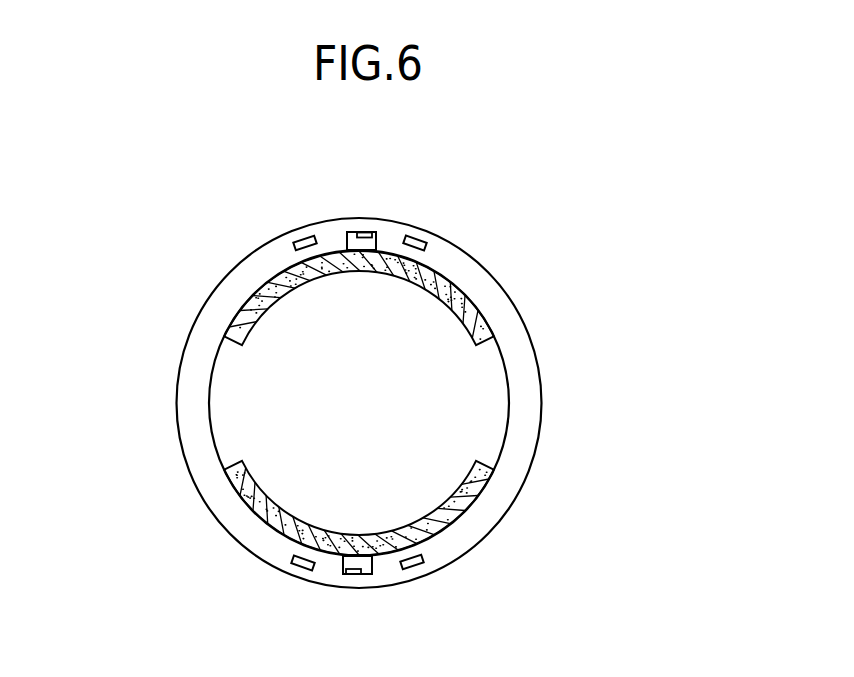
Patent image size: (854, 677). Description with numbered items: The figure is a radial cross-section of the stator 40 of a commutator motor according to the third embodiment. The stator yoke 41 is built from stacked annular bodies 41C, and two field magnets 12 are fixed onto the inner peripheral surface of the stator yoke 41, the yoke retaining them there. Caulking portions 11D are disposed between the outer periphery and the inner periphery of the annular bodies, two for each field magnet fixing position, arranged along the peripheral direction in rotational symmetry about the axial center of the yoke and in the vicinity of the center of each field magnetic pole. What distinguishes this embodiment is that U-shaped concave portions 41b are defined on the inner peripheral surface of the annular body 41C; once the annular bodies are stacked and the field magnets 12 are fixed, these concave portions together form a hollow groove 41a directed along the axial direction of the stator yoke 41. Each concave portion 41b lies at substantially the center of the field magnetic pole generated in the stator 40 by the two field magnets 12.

The caulking portion 11D is at (300, 243).
The field magnet 12 is at (453, 288).
The stator 40 is at (607, 477).
The stator yoke 41 is at (530, 328).
The annular body 41C is at (523, 403).
The groove 41a is at (365, 232).
The concave portion 41b is at (385, 239).